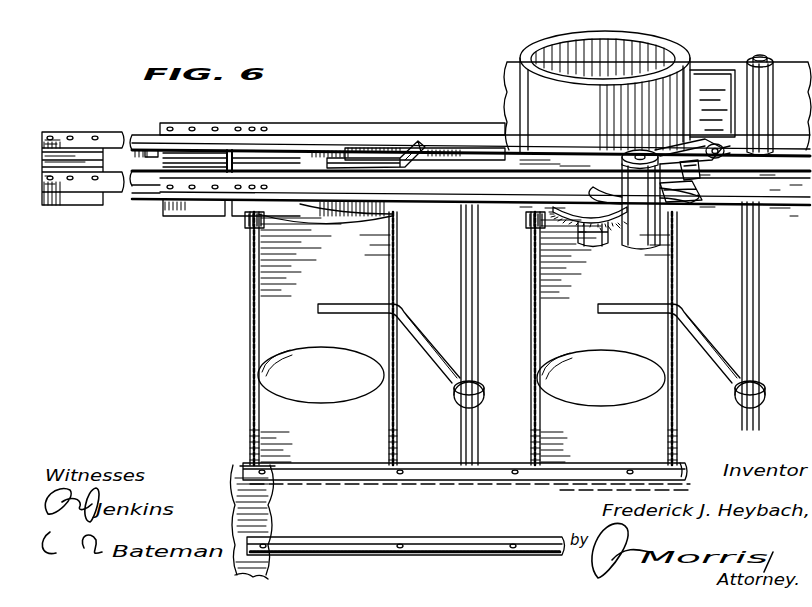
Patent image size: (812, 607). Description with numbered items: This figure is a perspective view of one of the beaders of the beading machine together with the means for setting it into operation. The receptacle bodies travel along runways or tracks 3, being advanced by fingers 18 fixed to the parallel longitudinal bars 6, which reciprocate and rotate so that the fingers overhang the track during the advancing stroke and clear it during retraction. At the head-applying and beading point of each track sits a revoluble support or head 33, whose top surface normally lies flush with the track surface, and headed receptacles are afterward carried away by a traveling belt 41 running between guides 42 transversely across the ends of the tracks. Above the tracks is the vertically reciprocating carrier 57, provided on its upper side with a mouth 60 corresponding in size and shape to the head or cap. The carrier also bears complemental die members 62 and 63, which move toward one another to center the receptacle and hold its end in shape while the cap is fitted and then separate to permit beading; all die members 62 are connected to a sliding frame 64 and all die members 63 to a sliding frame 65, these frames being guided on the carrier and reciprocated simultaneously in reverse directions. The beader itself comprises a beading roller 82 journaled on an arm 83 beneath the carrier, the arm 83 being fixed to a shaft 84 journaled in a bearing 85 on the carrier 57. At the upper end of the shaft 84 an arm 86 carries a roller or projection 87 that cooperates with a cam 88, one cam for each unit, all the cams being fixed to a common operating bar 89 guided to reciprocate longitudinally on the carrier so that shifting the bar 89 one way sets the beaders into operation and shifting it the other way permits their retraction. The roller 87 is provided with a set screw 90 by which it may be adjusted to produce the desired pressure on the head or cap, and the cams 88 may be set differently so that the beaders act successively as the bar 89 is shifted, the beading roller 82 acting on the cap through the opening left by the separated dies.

The runway or track 3 is at (250, 310).
The longitudinal bar 6 is at (461, 300).
The finger 18 is at (418, 330).
The revoluble support or head 33 is at (262, 362).
The traveling belt 41 is at (466, 491).
The guide 42 is at (250, 484).
The carrier 57 is at (713, 66).
The mouth 60 is at (670, 54).
The die member 62 is at (254, 236).
The die member 63 is at (372, 217).
The sliding frame 64 is at (226, 126).
The sliding frame 65 is at (153, 152).
The beading roller 82 is at (552, 220).
The arm 83 is at (598, 247).
The shaft 84 is at (634, 156).
The bearing 85 is at (658, 222).
The arm 86 is at (688, 133).
The roller or projection 87 is at (700, 180).
The cam 88 is at (421, 141).
The operating bar 89 is at (460, 166).
The set screw 90 is at (726, 148).